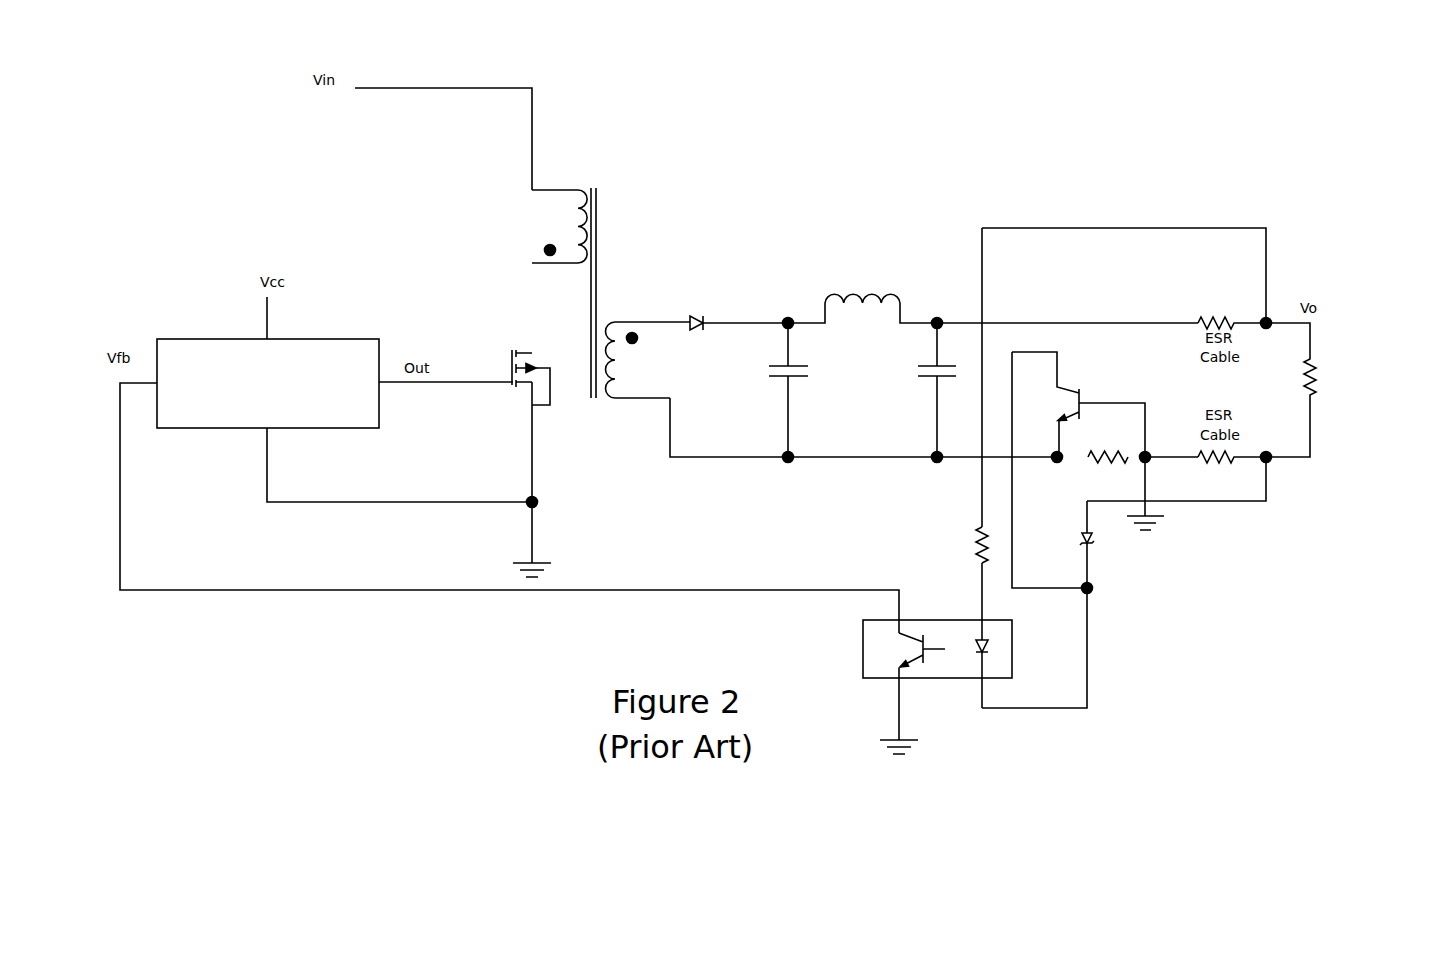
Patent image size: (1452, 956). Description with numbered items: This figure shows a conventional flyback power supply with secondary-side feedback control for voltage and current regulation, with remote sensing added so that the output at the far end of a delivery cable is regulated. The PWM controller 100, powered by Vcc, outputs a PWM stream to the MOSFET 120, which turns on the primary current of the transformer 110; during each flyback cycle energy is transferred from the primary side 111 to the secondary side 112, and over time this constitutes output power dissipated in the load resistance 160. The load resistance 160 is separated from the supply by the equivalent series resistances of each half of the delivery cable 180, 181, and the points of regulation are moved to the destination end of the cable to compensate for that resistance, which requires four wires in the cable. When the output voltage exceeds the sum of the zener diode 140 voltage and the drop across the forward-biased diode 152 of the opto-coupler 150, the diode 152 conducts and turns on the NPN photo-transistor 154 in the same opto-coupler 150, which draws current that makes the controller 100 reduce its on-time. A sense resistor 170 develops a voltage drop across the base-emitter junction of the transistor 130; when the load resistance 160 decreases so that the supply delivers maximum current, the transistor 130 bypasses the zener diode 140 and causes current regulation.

The PWM controller 100 is at (303, 330).
The transformer 110 is at (602, 293).
The primary side 111 is at (563, 168).
The secondary side 112 is at (623, 420).
The MOSFET 120 is at (507, 388).
The transistor 130 is at (1063, 368).
The zener diode 140 is at (1100, 536).
The opto-coupler 150 is at (923, 612).
The opto-coupler diode 152 is at (995, 644).
The NPN photo-transistor 154 is at (905, 650).
The load resistance 160 is at (1325, 345).
The current sense resistor 170 is at (968, 552).
The ESR cable 180 is at (1213, 468).
The ESR cable 181 is at (1230, 367).